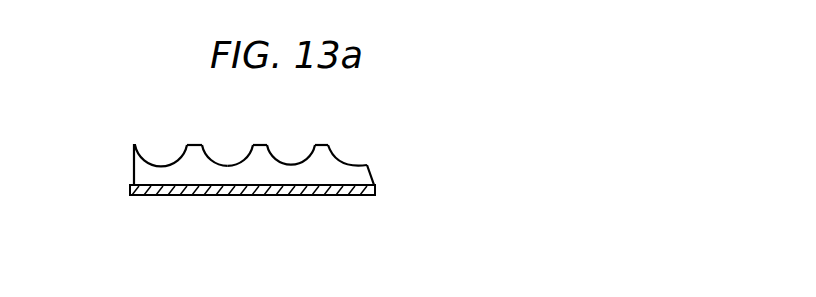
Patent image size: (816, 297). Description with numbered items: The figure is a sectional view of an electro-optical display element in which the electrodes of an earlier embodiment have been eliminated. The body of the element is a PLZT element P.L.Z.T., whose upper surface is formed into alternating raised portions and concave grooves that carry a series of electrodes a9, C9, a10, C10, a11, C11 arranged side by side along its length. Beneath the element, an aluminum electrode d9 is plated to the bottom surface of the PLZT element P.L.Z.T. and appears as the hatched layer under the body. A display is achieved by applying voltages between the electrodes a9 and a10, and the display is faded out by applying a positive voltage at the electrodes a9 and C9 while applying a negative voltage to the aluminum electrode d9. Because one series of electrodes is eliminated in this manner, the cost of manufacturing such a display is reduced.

The electrode a9 is at (178, 156).
The electrode C9 is at (212, 152).
The electrode a10 is at (248, 156).
The electrode C10 is at (275, 154).
The electrode a11 is at (304, 156).
The electrode C11 is at (338, 152).
The PLZT element P.L.Z.T. is at (363, 174).
The aluminum electrode d9 is at (343, 196).